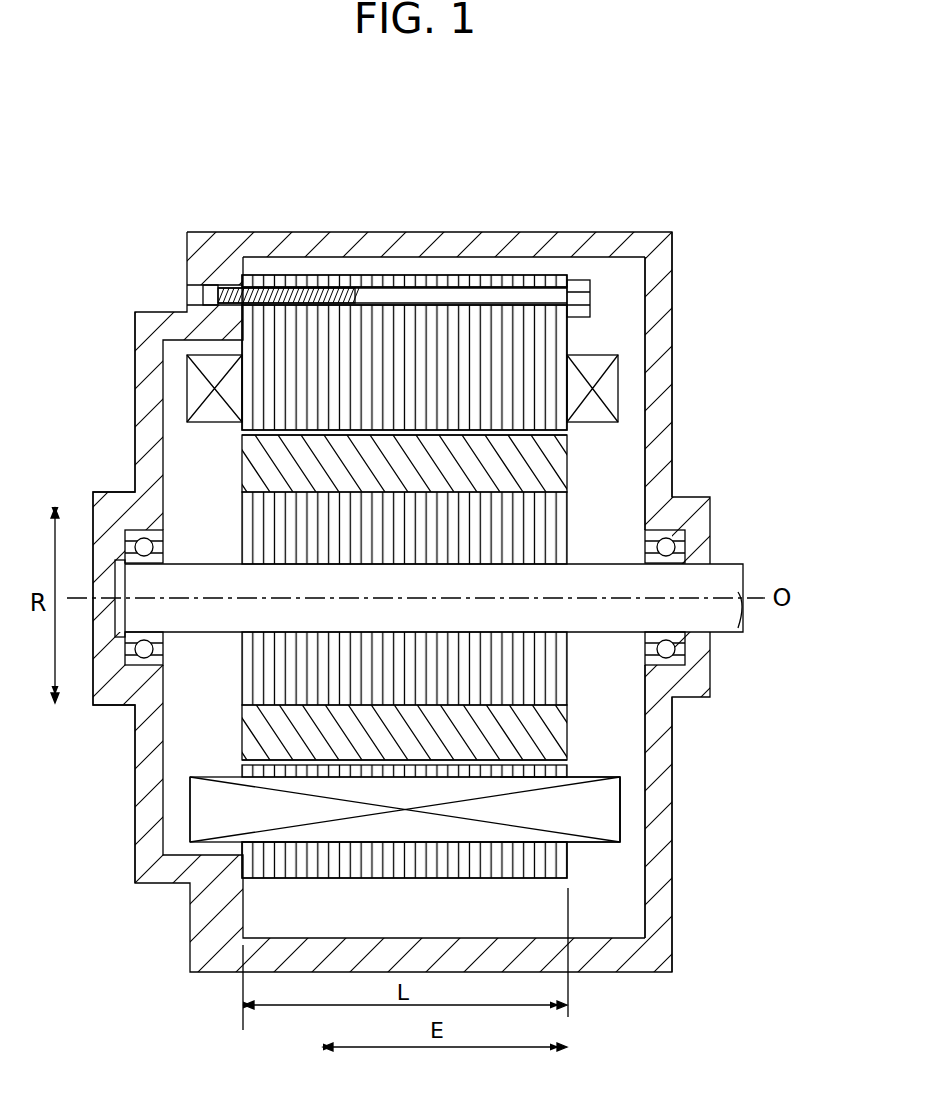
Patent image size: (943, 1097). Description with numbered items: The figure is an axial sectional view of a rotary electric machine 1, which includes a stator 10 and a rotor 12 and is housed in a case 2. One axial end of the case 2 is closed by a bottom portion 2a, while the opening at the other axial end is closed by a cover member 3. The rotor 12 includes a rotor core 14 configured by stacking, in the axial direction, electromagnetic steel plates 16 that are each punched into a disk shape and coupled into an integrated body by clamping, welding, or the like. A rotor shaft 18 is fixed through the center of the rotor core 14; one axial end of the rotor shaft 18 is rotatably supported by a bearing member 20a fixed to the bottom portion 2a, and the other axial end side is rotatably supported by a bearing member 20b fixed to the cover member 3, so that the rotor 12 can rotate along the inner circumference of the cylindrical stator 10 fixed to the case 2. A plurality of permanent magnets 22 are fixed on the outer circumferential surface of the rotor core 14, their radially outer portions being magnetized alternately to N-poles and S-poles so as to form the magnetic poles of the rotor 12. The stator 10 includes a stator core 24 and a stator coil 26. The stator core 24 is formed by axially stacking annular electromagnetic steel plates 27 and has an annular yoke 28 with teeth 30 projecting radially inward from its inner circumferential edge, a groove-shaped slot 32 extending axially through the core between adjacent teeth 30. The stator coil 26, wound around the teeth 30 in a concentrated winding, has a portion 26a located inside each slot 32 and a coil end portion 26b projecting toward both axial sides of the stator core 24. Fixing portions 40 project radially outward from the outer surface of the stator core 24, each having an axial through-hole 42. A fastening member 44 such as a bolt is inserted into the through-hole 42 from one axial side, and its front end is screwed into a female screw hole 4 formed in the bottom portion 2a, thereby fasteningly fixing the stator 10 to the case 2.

The rotary electric machine 1 is at (612, 287).
The case 2 is at (441, 232).
The bottom portion 2a is at (137, 425).
The cover member 3 is at (672, 392).
The female screw hole 4 is at (190, 300).
The stator 10 is at (446, 553).
The rotor 12 is at (459, 597).
The rotor core 14 is at (570, 660).
The electromagnetic steel plates 16 is at (570, 722).
The rotor shaft 18 is at (607, 562).
The bearing member 20a is at (140, 667).
The bearing member 20b is at (678, 675).
The permanent magnets 22 is at (405, 597).
The stator core 24 is at (572, 333).
The stator coil 26 is at (418, 621).
The portion located inside each slot 26a is at (366, 830).
The coil end portion 26b is at (620, 838).
The electromagnetic steel plates 27 is at (514, 310).
The yoke 28 is at (408, 868).
The teeth 30 is at (266, 436).
The slot 32 is at (556, 816).
The fixing portions 40 is at (412, 275).
The through-hole 42 is at (357, 290).
The fastening member 44 is at (360, 247).